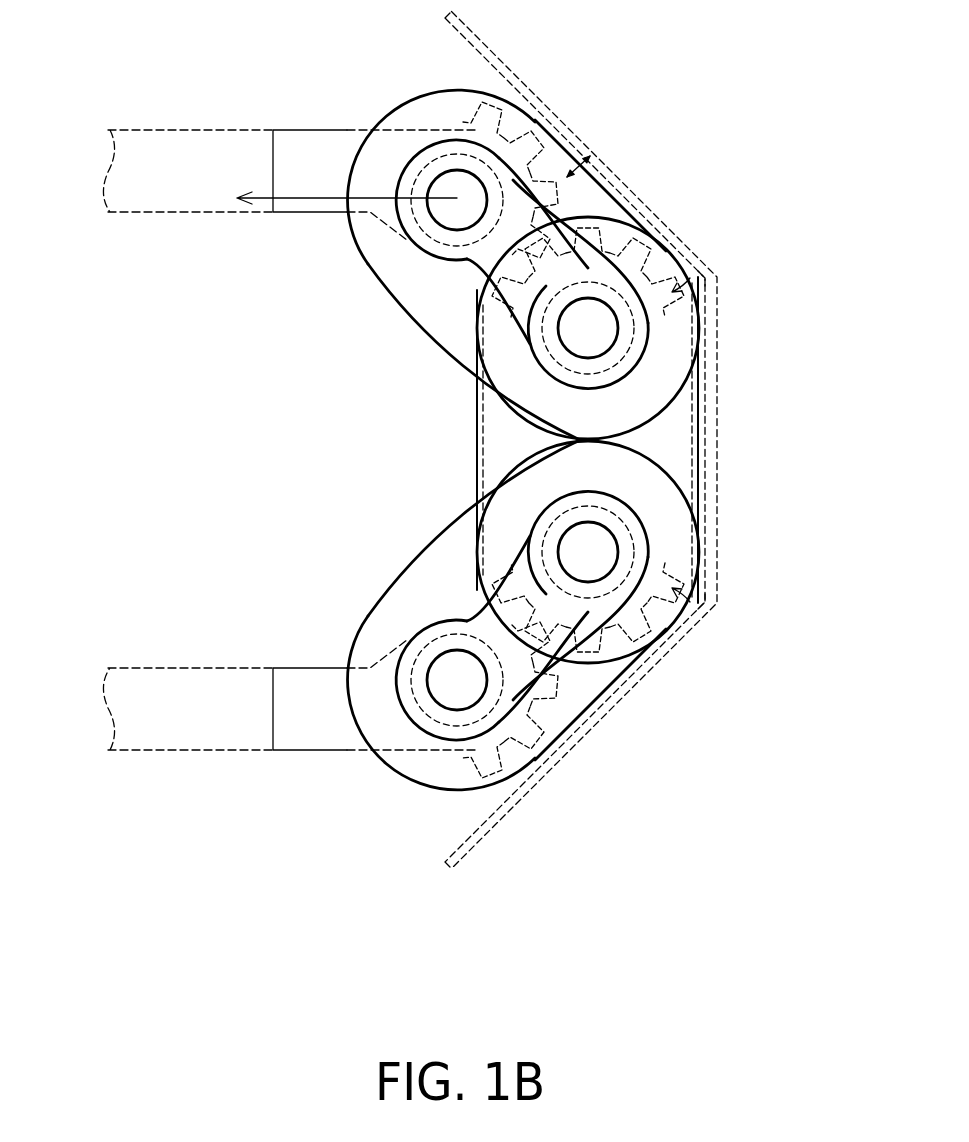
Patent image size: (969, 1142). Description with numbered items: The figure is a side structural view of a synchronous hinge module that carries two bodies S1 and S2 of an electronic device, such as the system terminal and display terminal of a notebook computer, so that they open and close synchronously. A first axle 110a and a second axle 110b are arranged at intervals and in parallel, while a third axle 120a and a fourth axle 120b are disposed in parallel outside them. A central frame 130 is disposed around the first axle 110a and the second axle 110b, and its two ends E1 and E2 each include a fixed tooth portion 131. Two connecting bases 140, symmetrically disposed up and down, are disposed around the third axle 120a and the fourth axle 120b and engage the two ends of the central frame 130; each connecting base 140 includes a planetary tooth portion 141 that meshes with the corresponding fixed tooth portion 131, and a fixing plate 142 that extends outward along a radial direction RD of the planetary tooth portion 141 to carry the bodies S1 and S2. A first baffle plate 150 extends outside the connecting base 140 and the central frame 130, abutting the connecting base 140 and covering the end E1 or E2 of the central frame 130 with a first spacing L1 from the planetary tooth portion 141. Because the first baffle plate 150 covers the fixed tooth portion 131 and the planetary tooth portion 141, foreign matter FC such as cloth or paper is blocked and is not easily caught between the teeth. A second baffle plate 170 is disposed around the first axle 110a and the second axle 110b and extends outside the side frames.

The central frame 130 is at (678, 422).
The fixed tooth portion 131 is at (630, 205).
The third axle 120a is at (452, 190).
The fourth axle 120b is at (473, 687).
The first axle 110a is at (597, 315).
The second axle 110b is at (597, 565).
The connecting base 140 is at (415, 790).
The planetary tooth portion 141 is at (497, 757).
The fixing plate 142 is at (327, 733).
The first baffle plate 150 is at (576, 150).
The second baffle plate 170 is at (698, 483).
The foreign matter FC is at (712, 447).
The end of the central frame E1 is at (718, 277).
The other end of the central frame E2 is at (718, 603).
The first spacing L1 is at (567, 177).
The body S1 is at (204, 158).
The body S2 is at (204, 722).
The radial direction RD is at (302, 200).